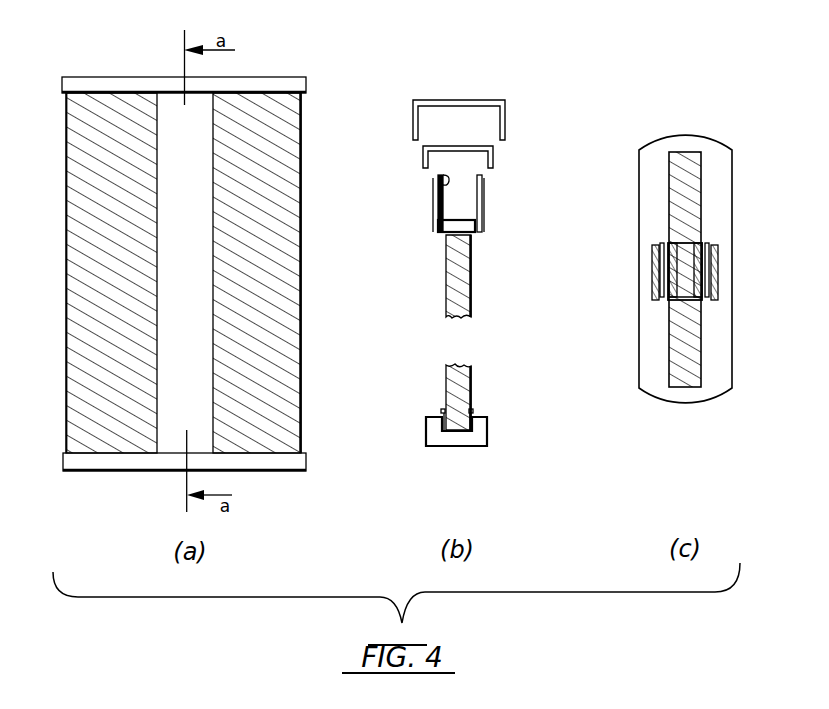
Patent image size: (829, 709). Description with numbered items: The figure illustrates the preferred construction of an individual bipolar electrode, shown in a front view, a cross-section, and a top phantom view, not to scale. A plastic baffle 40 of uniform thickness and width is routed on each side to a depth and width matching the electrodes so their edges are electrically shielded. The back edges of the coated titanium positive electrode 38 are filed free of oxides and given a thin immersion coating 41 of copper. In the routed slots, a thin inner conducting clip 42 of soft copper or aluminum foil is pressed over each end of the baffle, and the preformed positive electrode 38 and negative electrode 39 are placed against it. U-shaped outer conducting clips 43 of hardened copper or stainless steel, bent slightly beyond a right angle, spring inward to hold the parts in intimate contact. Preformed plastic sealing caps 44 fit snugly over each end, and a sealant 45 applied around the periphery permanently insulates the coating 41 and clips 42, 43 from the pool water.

The positive electrode 38 is at (433, 210).
The negative electrode 39 is at (483, 222).
The baffle 40 is at (277, 265).
The immersion coating 41 is at (443, 175).
The inner conducting clip 42 is at (460, 220).
The outer conducting clip 43 is at (494, 157).
The sealing cap 44 is at (273, 77).
The sealant 45 is at (477, 413).